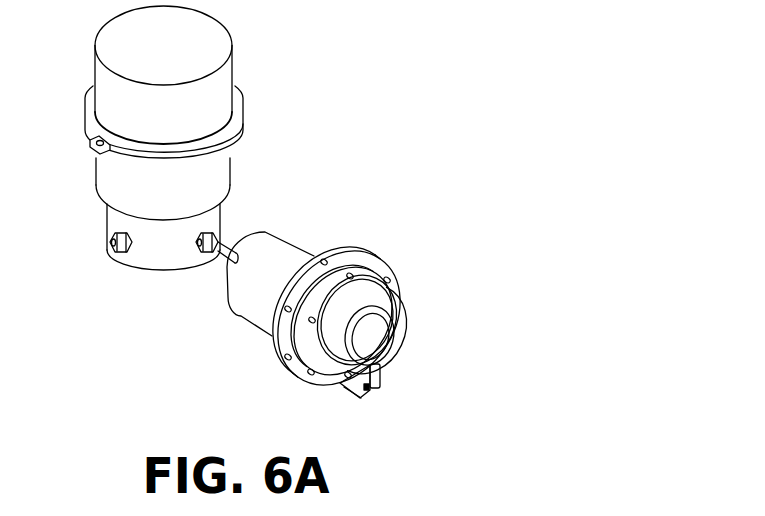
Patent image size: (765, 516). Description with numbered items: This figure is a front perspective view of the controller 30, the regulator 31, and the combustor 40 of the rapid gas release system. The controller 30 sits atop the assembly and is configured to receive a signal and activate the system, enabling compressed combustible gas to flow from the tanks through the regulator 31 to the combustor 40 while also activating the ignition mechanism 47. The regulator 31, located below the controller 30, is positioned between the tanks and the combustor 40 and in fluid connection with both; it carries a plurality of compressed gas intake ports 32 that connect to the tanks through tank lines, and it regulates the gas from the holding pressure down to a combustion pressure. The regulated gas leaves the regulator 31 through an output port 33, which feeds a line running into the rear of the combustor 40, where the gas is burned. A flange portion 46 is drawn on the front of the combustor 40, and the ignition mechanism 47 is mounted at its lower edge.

The controller 30 is at (163, 75).
The regulator 31 is at (164, 178).
The compressed gas intake ports 32 is at (110, 246).
The output port 33 is at (213, 253).
The combustor 40 is at (295, 245).
The flange 46 is at (294, 349).
The ignition mechanism 47 is at (382, 372).